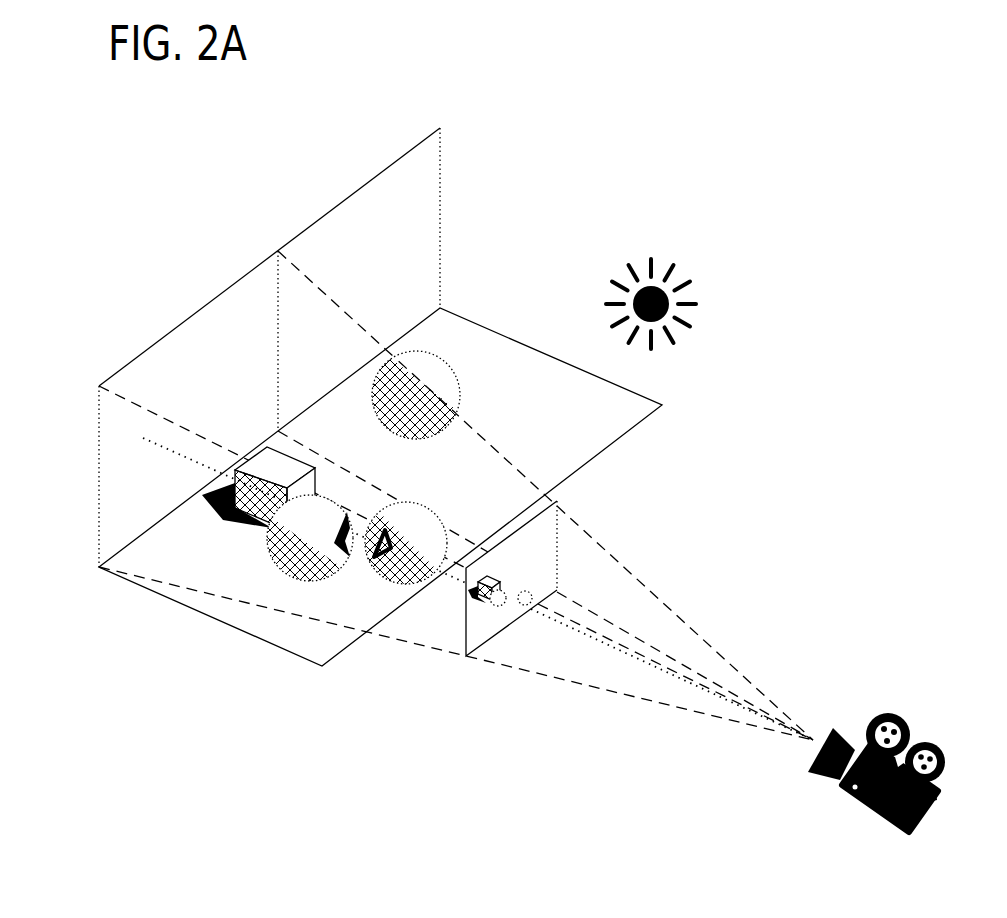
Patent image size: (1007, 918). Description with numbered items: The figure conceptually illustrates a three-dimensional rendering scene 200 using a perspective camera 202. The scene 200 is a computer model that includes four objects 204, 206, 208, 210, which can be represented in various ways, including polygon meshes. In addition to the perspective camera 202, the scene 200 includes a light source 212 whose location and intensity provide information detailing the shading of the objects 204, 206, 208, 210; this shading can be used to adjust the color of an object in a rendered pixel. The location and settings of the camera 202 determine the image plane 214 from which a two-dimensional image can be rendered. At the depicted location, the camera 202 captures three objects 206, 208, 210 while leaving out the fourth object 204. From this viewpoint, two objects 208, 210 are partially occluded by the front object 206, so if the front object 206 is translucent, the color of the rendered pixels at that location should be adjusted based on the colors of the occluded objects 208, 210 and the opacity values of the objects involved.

The three-dimensional rendering scene 200 is at (480, 185).
The perspective camera 202 is at (893, 713).
The object 204 is at (430, 355).
The front object 206 is at (466, 567).
The object 208 is at (308, 582).
The object 210 is at (267, 447).
The light source 212 is at (608, 277).
The image plane 214 is at (468, 627).